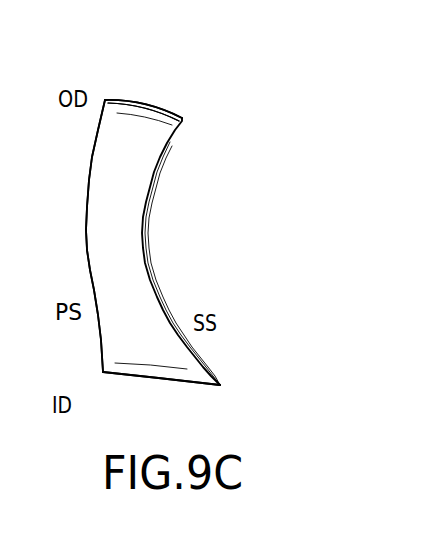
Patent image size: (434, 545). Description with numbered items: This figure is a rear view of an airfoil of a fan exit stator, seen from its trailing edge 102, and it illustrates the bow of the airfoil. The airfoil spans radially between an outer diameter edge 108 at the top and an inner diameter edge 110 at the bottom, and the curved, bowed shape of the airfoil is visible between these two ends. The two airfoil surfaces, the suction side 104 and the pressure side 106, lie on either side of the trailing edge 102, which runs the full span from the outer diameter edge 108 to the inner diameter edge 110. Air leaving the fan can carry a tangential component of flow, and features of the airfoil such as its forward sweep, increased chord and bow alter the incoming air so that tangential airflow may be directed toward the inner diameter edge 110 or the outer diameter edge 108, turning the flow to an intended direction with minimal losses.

The trailing edge 102 is at (172, 138).
The suction side 104 is at (88, 192).
The pressure side 106 is at (193, 354).
The outer diameter edge 108 is at (155, 103).
The inner diameter edge 110 is at (157, 377).